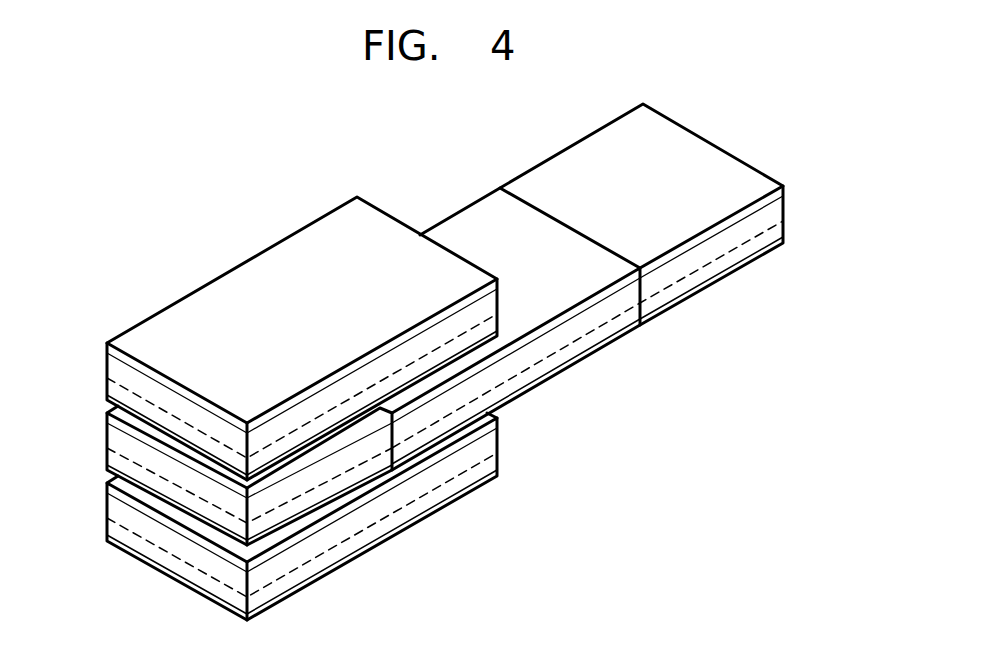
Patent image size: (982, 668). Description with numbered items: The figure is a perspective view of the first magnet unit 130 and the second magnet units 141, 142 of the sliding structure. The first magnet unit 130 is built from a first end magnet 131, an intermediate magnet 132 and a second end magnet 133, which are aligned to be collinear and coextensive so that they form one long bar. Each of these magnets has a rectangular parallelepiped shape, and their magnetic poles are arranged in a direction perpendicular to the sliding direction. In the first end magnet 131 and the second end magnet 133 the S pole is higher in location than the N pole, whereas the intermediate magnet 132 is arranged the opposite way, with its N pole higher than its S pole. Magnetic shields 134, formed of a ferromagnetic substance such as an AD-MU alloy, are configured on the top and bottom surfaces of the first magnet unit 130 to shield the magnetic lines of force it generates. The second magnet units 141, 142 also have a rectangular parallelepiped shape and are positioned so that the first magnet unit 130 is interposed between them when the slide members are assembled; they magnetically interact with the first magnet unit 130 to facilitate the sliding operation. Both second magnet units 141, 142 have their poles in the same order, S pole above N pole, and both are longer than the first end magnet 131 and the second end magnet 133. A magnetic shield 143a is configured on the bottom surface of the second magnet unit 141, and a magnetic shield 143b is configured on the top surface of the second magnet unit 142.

The first magnet unit 130 is at (492, 302).
The first end magnet 131 is at (278, 516).
The intermediate magnet 132 is at (575, 348).
The second end magnet 133 is at (745, 248).
The magnetic shields 134 is at (783, 238).
The second magnet unit 141 is at (485, 470).
The second magnet unit 142 is at (441, 329).
The magnetic shield 143a is at (467, 493).
The magnetic shield 143b is at (462, 300).